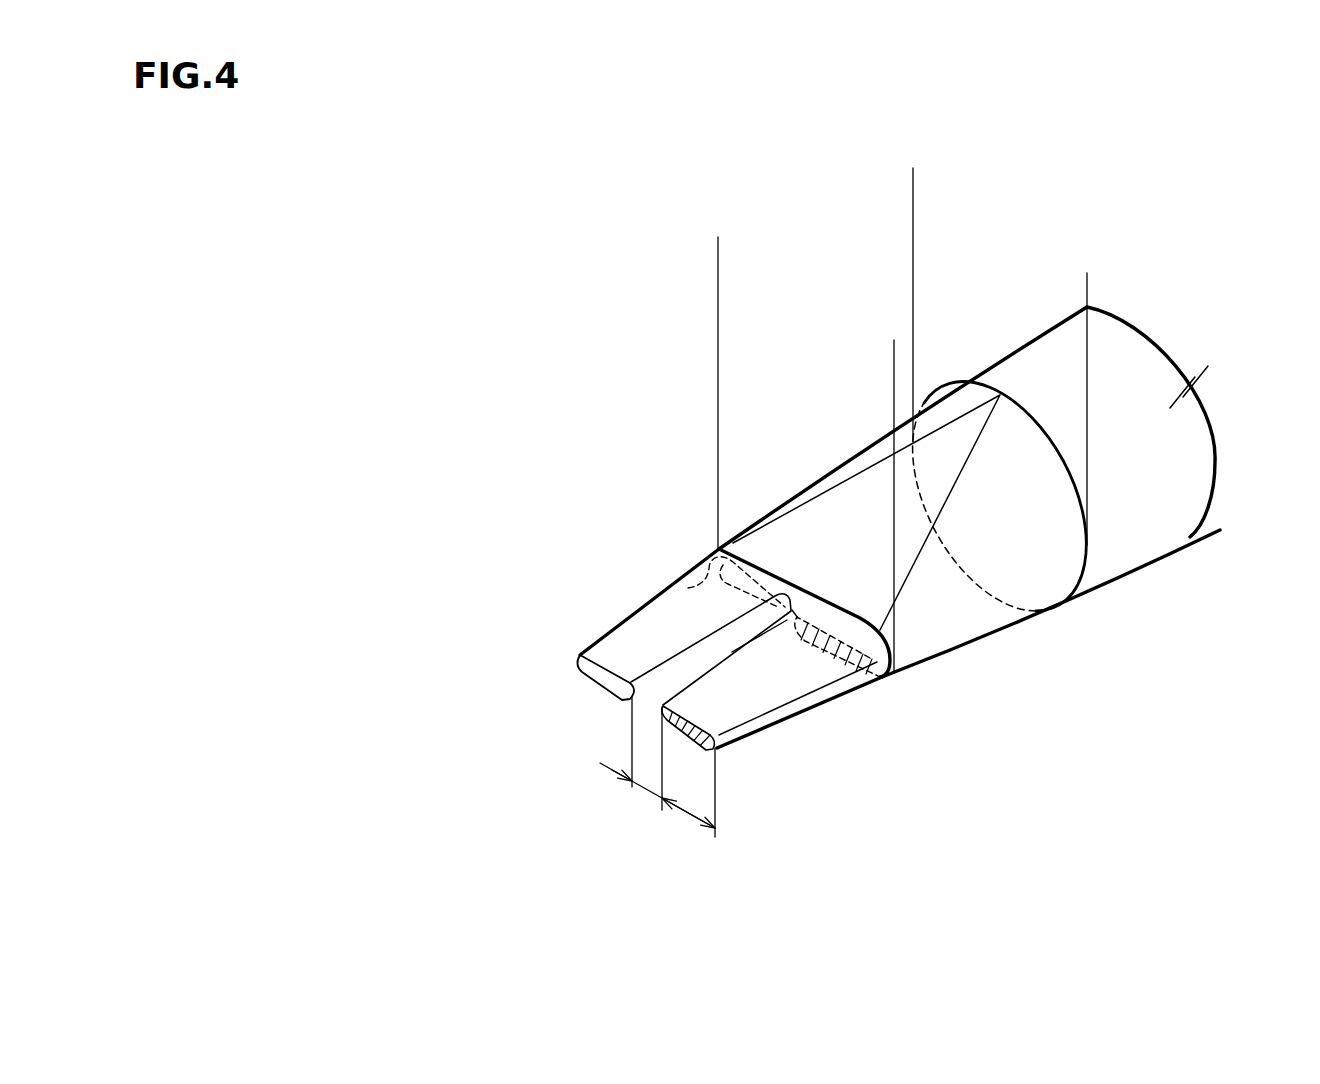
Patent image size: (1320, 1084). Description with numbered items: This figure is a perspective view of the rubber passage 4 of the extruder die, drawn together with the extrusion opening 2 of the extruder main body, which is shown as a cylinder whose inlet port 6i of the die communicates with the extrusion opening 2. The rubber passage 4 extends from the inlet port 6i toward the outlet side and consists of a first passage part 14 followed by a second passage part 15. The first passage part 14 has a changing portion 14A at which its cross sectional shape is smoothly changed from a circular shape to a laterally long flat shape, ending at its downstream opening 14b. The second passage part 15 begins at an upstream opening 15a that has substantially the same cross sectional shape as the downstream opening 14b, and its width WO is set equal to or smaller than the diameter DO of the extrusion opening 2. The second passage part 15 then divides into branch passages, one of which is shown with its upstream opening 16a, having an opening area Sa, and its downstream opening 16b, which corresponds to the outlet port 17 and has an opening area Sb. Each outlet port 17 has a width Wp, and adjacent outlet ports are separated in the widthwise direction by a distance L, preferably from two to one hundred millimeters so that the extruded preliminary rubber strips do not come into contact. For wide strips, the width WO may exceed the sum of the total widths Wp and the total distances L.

The extrusion opening 2 is at (1005, 482).
The rubber passage 4 is at (1142, 833).
The inlet port 6i is at (1030, 457).
The first passage part 14 is at (940, 628).
The changing portion 14A is at (930, 624).
The downstream opening 14b is at (716, 542).
The second passage part 15 is at (785, 738).
The upstream opening 15a is at (805, 592).
The upstream opening 16a is at (688, 588).
The downstream opening 16b is at (603, 674).
The outlet port 17 is at (554, 663).
The distance L is at (645, 793).
The width of outlet port Wp is at (687, 817).
The width of upstream opening WO is at (893, 343).
The diameter of extrusion opening DO is at (1087, 275).
The opening area of upstream opening Sa is at (843, 668).
The opening area of downstream opening Sb is at (688, 743).